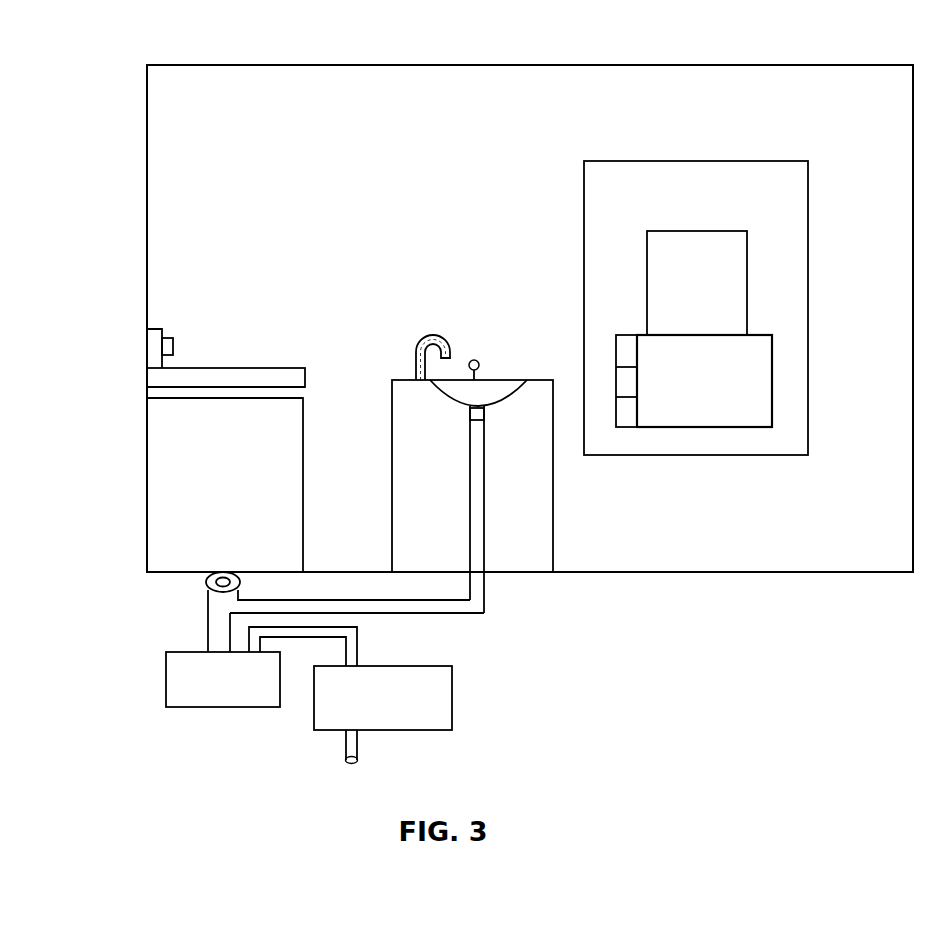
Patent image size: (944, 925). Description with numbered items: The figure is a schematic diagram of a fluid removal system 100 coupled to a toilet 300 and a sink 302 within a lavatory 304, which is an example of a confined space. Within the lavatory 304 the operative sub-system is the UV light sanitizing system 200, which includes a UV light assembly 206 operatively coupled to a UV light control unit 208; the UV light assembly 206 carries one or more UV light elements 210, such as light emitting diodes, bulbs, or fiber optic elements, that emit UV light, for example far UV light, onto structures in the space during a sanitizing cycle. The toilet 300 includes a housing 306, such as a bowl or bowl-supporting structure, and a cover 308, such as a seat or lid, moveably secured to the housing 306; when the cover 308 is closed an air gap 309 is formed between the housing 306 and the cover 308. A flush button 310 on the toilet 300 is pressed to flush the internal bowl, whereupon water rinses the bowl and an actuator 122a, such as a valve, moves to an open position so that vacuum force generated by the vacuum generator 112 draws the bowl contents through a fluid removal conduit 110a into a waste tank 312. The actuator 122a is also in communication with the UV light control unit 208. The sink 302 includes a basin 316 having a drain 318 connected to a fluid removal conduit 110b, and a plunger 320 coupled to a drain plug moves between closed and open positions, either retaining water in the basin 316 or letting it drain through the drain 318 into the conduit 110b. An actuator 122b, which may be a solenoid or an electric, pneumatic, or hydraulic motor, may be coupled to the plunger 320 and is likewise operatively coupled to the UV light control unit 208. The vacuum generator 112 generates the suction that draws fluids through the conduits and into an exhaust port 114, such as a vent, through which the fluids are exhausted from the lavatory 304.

The lavatory 304 is at (828, 58).
The fluid removal system 100 is at (711, 306).
The UV light sanitizing system 200 is at (808, 208).
The UV light control unit 208 is at (747, 287).
The UV light assembly 206 is at (772, 365).
The UV light elements 210 is at (624, 342).
The toilet 300 is at (267, 405).
The flush button 310 is at (168, 338).
The cover 308 is at (274, 367).
The air gap 309 is at (298, 396).
The housing 306 is at (308, 458).
The sink 302 is at (491, 432).
The plunger 320 is at (474, 355).
The basin 316 is at (447, 400).
The drain 318 is at (486, 408).
The actuator 122b is at (487, 420).
The actuator 122a is at (205, 582).
The fluid removal conduit 110a is at (217, 617).
The fluid removal conduit 110b is at (486, 596).
The waste tank 312 is at (165, 690).
The vacuum generator 112 is at (452, 697).
The exhaust port 114 is at (345, 758).